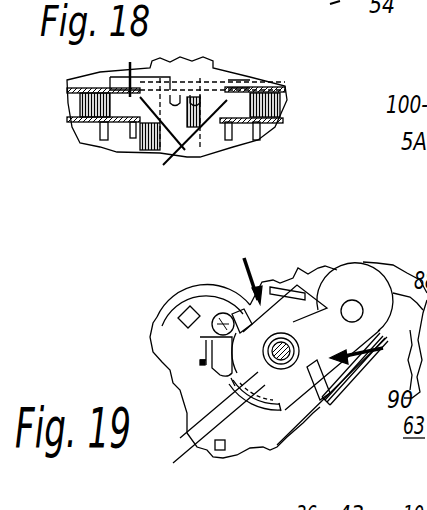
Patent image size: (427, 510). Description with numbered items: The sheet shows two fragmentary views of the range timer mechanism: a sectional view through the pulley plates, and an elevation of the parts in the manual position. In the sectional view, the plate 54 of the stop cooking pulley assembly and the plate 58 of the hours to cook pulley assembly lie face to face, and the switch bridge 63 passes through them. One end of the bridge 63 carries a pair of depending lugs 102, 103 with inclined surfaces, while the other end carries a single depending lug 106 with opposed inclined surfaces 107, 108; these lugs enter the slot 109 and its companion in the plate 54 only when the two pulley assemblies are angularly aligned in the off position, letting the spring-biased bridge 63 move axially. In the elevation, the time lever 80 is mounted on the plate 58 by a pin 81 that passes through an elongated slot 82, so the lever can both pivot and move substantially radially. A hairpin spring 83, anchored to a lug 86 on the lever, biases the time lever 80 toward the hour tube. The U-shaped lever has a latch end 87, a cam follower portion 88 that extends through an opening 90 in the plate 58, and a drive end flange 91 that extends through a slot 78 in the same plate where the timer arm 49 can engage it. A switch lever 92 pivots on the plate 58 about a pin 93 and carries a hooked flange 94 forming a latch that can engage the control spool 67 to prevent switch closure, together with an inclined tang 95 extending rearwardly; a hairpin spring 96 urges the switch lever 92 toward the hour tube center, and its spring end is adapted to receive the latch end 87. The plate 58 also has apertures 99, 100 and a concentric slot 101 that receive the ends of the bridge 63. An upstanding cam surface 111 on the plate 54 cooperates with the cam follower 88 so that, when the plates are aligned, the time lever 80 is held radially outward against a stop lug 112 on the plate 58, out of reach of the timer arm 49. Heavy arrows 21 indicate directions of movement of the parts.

In FIG. 19, the direction arrow 21 is at (320, 320).
In FIG. 19, the timer arm 49 is at (260, 335).
In FIG. 18, the plate 54 is at (278, 126).
In FIG. 18, the plate 58 is at (277, 86).
In FIG. 19, the plate 58 is at (340, 257).
In FIG. 18, the switch bridge 63 is at (228, 82).
In FIG. 19, the switch bridge 63 is at (193, 427).
In FIG. 19, the control spool 67 is at (269, 351).
In FIG. 19, the slot 78 is at (238, 283).
In FIG. 19, the time lever 80 is at (315, 467).
In FIG. 19, the pin 81 is at (215, 312).
In FIG. 19, the elongated slot 82 is at (205, 318).
In FIG. 19, the hairpin spring 83 is at (165, 299).
In FIG. 19, the lug 86 is at (153, 325).
In FIG. 19, the latch end 87 is at (307, 420).
In FIG. 19, the cam follower portion 88 is at (178, 375).
In FIG. 19, the opening 90 is at (192, 397).
In FIG. 19, the drive end flange 91 is at (241, 292).
In FIG. 19, the switch lever 92 is at (395, 261).
In FIG. 19, the pin 93 is at (358, 309).
In FIG. 19, the hooked flange 94 is at (355, 376).
In FIG. 19, the inclined tang 95 is at (349, 286).
In FIG. 19, the hairpin spring 96 is at (409, 311).
In FIG. 19, the aperture 99 is at (280, 280).
In FIG. 19, the aperture 100 is at (330, 303).
In FIG. 18, the slot 101 is at (133, 66).
In FIG. 19, the slot 101 is at (163, 480).
In FIG. 19, the depending lug 102 is at (320, 300).
In FIG. 19, the depending lug 103 is at (325, 320).
In FIG. 18, the depending lug 106 is at (179, 143).
In FIG. 19, the depending lug 106 is at (252, 395).
In FIG. 18, the inclined surface 107 is at (145, 133).
In FIG. 18, the inclined surface 108 is at (250, 98).
In FIG. 18, the slot 109 is at (110, 147).
In FIG. 19, the cam surface 111 is at (205, 330).
In FIG. 19, the stop lug 112 is at (220, 450).